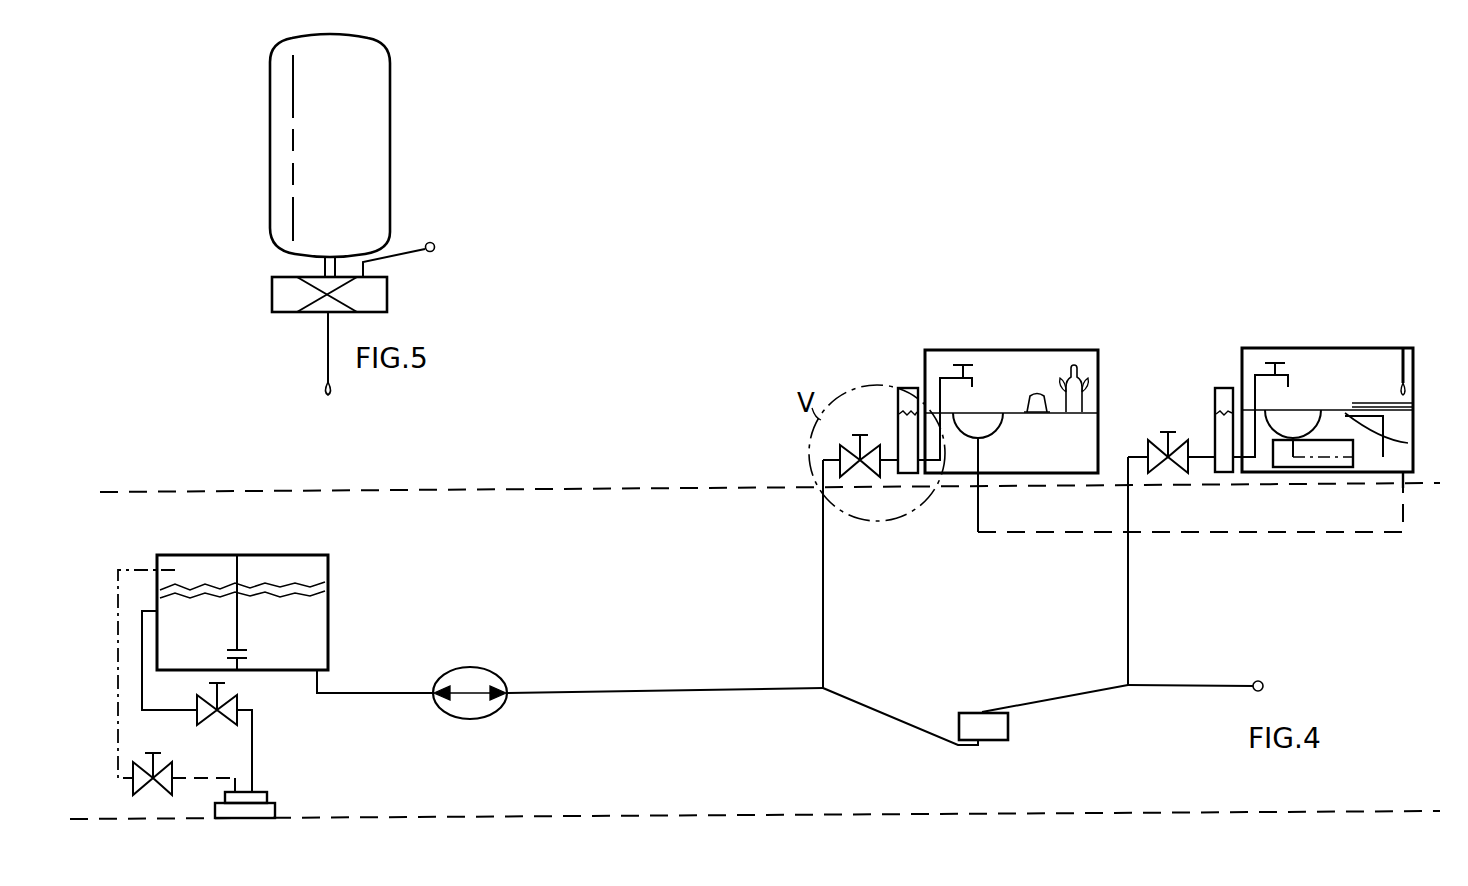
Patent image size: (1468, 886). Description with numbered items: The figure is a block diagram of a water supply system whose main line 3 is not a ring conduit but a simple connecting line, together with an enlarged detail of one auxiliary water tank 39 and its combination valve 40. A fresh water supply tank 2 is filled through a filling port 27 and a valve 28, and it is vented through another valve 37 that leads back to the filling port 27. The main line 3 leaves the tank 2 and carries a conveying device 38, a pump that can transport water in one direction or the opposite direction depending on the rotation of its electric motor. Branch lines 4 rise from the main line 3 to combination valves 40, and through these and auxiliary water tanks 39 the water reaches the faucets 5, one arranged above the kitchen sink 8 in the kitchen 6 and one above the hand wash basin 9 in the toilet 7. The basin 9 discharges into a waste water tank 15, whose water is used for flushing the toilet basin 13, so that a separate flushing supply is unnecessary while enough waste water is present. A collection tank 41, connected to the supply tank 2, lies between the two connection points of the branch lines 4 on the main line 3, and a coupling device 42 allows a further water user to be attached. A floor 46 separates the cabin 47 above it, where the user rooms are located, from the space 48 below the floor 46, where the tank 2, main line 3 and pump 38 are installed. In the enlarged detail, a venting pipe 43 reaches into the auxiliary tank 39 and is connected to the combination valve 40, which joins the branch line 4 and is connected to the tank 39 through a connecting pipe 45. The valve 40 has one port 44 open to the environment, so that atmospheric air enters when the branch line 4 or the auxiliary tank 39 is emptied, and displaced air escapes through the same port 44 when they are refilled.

In FIG. 4, the fresh water supply tank 2 is at (328, 577).
In FIG. 4, the main line 3 is at (705, 690).
In FIG. 5, the branch line 4 is at (327, 337).
In FIG. 4, the branch line 4 is at (823, 598).
In FIG. 4, the water faucet 5 is at (972, 387).
In FIG. 4, the kitchen 6 is at (1037, 350).
In FIG. 4, the toilet 7 is at (1363, 348).
In FIG. 4, the kitchen sink 8 is at (983, 413).
In FIG. 4, the hand wash basin 9 is at (1305, 410).
In FIG. 4, the toilet basin 13 is at (1403, 420).
In FIG. 4, the waste water tank 15 is at (1353, 473).
In FIG. 4, the filling port 27 is at (263, 812).
In FIG. 4, the valve 28 is at (237, 700).
In FIG. 4, the valve 37 is at (125, 770).
In FIG. 4, the conveying device 38 is at (494, 675).
In FIG. 5, the auxiliary water tank 39 is at (372, 107).
In FIG. 4, the auxiliary water tank 39 is at (910, 388).
In FIG. 5, the combination valve 40 is at (272, 296).
In FIG. 4, the combination valve 40 is at (874, 447).
In FIG. 4, the collection tank 41 is at (1008, 727).
In FIG. 4, the coupling device 42 is at (1260, 681).
In FIG. 5, the venting pipe 43 is at (310, 54).
In FIG. 5, the port 44 is at (434, 242).
In FIG. 5, the connecting pipe 45 is at (325, 268).
In FIG. 4, the floor 46 is at (642, 488).
In FIG. 4, the cabin 47 is at (702, 466).
In FIG. 4, the space below the floor 48 is at (740, 517).